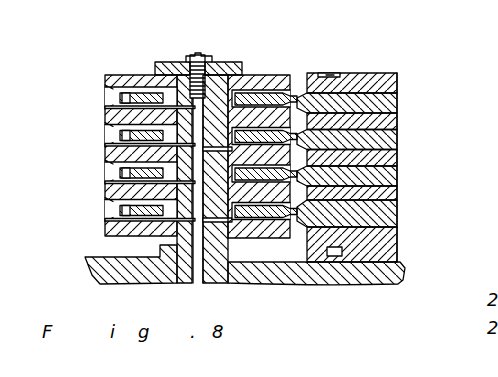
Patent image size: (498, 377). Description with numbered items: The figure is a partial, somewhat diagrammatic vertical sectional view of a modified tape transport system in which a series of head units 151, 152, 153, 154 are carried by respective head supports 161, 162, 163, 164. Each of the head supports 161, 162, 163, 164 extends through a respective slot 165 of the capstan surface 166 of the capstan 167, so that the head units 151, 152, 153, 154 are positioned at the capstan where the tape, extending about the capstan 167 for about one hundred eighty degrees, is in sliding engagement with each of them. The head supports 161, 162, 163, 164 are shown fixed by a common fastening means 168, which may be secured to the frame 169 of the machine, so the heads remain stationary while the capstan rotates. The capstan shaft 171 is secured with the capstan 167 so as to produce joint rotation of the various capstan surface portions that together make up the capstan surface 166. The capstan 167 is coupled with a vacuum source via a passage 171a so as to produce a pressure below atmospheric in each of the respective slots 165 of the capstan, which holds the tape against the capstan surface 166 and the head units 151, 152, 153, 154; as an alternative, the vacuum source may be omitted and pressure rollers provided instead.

The head unit 151 is at (105, 98).
The head unit 152 is at (105, 136).
The head unit 153 is at (100, 173).
The head unit 154 is at (100, 209).
The head support 161 is at (399, 102).
The head support 162 is at (399, 140).
The head support 163 is at (399, 178).
The head support 164 is at (399, 215).
The slot 165 is at (108, 97).
The capstan surface 166 is at (96, 79).
The capstan 167 is at (293, 37).
The common fastening means 168 is at (352, 73).
The frame 169 is at (384, 290).
The capstan shaft 171 is at (222, 251).
The passage 171a is at (191, 247).